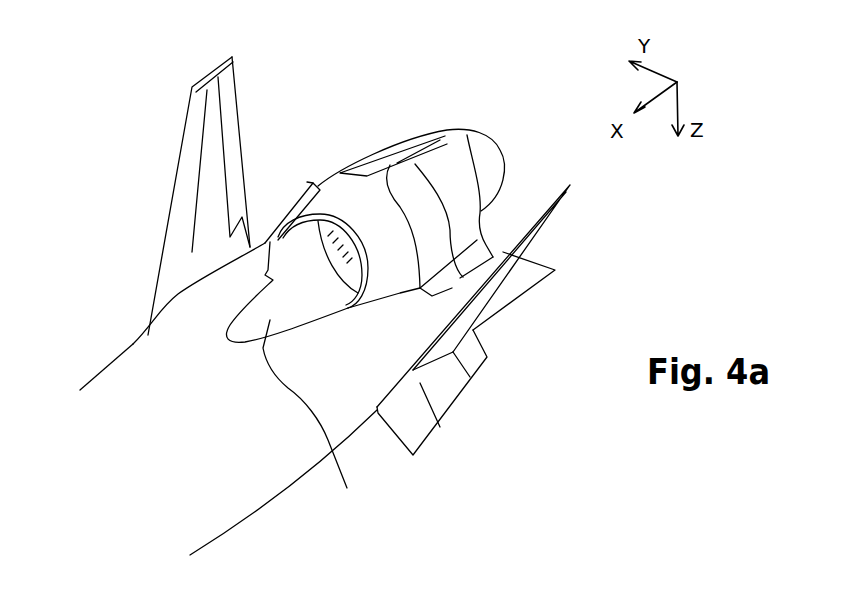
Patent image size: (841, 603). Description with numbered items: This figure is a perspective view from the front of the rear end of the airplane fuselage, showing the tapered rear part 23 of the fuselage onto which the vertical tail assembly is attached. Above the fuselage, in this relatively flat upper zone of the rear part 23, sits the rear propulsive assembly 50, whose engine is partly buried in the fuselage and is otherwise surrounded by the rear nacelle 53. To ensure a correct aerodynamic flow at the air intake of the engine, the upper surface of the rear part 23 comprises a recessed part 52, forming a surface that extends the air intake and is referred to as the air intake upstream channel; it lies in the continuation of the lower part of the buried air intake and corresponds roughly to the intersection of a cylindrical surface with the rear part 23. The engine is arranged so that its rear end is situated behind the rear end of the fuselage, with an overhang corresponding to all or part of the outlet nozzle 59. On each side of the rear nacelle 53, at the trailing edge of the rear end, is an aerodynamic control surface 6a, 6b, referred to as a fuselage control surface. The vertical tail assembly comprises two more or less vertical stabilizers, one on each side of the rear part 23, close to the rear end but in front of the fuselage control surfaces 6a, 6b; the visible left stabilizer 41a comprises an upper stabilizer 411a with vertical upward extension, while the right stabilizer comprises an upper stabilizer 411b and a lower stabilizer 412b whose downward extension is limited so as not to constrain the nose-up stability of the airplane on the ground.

The upper stabilizer 411a is at (187, 165).
The vertical stabilizer 41a is at (147, 250).
The tapered rear part 23 is at (117, 387).
The aerodynamic control surface 6a is at (298, 202).
The rear propulsive assembly 50 is at (400, 130).
The rear nacelle 53 is at (466, 155).
The outlet nozzle 59 is at (488, 150).
The recessed part 52 is at (314, 421).
The upper stabilizer 411b is at (548, 232).
The lower stabilizer 412b is at (453, 390).
The aerodynamic control surface 6b is at (520, 293).